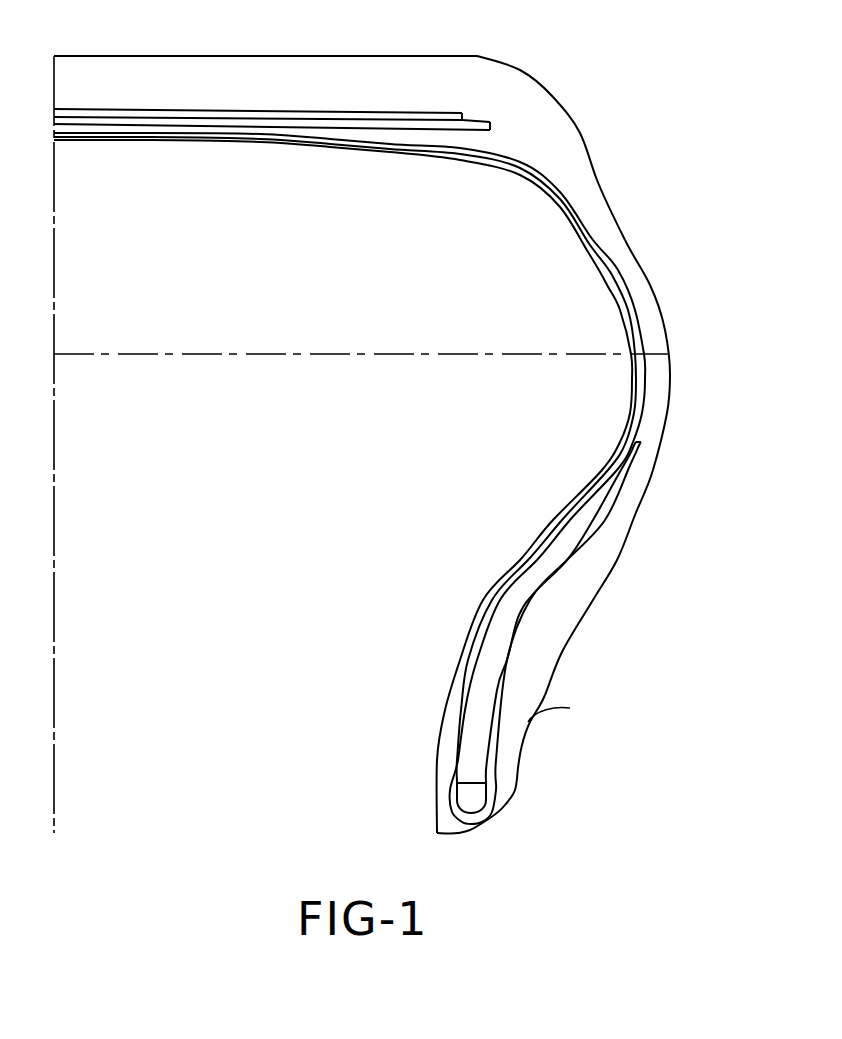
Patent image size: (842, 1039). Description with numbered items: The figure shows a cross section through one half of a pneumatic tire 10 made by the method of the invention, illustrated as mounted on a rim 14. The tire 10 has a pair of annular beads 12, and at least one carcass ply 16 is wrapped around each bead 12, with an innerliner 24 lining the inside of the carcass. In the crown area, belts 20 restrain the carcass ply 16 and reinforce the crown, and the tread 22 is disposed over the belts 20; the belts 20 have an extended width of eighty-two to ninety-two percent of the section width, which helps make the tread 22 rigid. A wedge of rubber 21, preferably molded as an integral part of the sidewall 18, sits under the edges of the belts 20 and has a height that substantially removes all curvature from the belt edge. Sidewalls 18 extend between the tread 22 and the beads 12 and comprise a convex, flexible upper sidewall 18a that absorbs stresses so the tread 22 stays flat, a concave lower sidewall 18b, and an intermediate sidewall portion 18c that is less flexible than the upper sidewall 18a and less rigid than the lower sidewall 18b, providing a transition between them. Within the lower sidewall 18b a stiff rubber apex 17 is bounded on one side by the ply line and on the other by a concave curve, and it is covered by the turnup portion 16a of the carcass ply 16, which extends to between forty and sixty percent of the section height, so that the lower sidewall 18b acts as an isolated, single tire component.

The tire 10 is at (356, 766).
The annular beads 12 is at (472, 800).
The rim 14 is at (540, 752).
The carcass ply 16 is at (465, 697).
The turnup portion 16a is at (625, 467).
The apex 17 is at (510, 622).
The sidewalls 18 is at (609, 375).
The upper sidewall 18a is at (580, 143).
The lower sidewall 18b is at (562, 652).
The sidewall portion 18c is at (668, 326).
The belts 20 is at (412, 117).
The wedge of rubber 21 is at (522, 108).
The tread 22 is at (362, 55).
The innerliner 24 is at (517, 180).